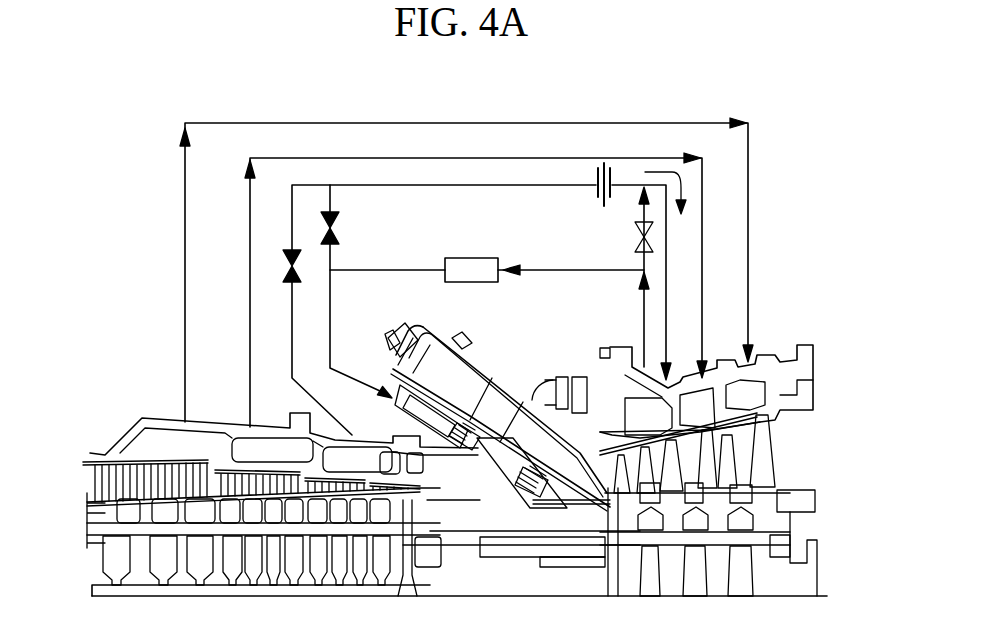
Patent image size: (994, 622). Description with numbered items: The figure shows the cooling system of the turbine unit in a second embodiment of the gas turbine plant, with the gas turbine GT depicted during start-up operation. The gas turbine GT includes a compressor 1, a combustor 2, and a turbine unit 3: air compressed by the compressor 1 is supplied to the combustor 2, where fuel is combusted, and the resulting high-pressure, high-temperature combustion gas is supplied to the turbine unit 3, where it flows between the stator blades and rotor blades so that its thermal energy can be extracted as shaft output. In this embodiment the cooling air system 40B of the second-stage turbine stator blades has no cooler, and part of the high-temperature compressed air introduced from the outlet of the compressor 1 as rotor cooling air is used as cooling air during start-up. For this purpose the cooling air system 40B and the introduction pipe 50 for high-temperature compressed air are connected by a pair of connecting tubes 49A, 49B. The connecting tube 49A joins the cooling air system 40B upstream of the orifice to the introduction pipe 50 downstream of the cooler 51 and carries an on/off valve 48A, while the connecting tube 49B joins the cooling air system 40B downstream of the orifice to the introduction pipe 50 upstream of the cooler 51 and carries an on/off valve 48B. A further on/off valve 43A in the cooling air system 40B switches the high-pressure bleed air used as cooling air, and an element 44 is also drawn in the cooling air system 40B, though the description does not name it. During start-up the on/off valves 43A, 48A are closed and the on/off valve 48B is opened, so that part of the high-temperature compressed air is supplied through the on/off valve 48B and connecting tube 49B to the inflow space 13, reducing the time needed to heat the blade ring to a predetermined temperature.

The compressor 1 is at (76, 462).
The combustor 2 is at (481, 350).
The turbine unit 3 is at (818, 450).
The inflow space 13 is at (657, 407).
The cooling air system 40B is at (464, 150).
The on/off valve 43A is at (283, 262).
The heat exchanger / heater 44 is at (614, 176).
The on/off valve 48A is at (338, 233).
The on/off valve 48B is at (637, 243).
The connecting tube 49A is at (335, 198).
The connecting tube 49B is at (638, 210).
The introduction pipe 50 is at (555, 273).
The cooler 51 is at (443, 280).
The gas turbine GT is at (785, 260).